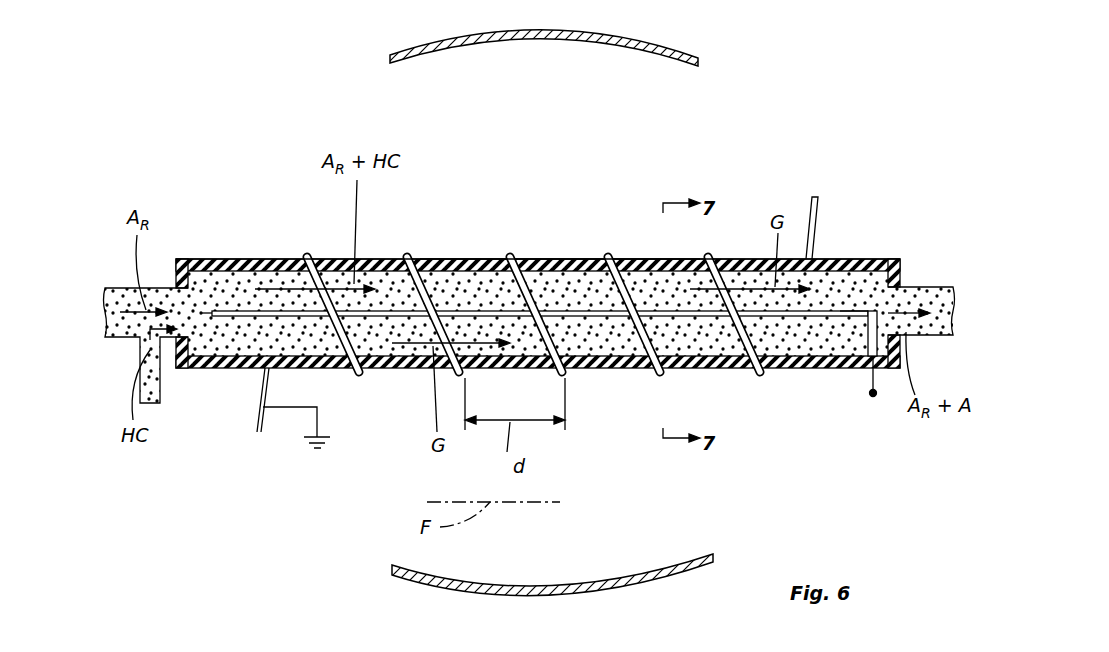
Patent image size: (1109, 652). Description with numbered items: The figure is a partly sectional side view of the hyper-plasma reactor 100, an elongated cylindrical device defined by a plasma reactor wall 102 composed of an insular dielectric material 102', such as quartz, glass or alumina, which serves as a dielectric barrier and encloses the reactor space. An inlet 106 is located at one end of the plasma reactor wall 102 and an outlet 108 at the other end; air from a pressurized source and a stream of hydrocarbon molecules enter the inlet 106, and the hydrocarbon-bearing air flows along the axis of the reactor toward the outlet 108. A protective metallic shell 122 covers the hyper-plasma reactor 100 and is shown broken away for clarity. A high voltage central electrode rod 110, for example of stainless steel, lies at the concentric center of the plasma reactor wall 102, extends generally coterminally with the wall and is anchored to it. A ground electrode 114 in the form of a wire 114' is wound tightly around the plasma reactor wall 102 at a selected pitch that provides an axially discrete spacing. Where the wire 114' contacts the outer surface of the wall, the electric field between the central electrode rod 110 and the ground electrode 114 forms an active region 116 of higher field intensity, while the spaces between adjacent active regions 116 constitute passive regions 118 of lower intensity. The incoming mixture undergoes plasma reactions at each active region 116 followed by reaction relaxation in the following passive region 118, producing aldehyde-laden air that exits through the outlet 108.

The hyper-plasma reactor 100 is at (434, 243).
The plasma reactor wall 102 is at (538, 270).
The insular dielectric material 102' is at (560, 236).
The inlet 106 is at (200, 393).
The outlet 108 is at (898, 345).
The central electrode rod 110 is at (868, 304).
The ground electrode 114 is at (483, 276).
The wire 114' is at (748, 268).
The active region 116 is at (410, 372).
The passive region 118 is at (281, 276).
The protective metallic shell 122 is at (598, 38).